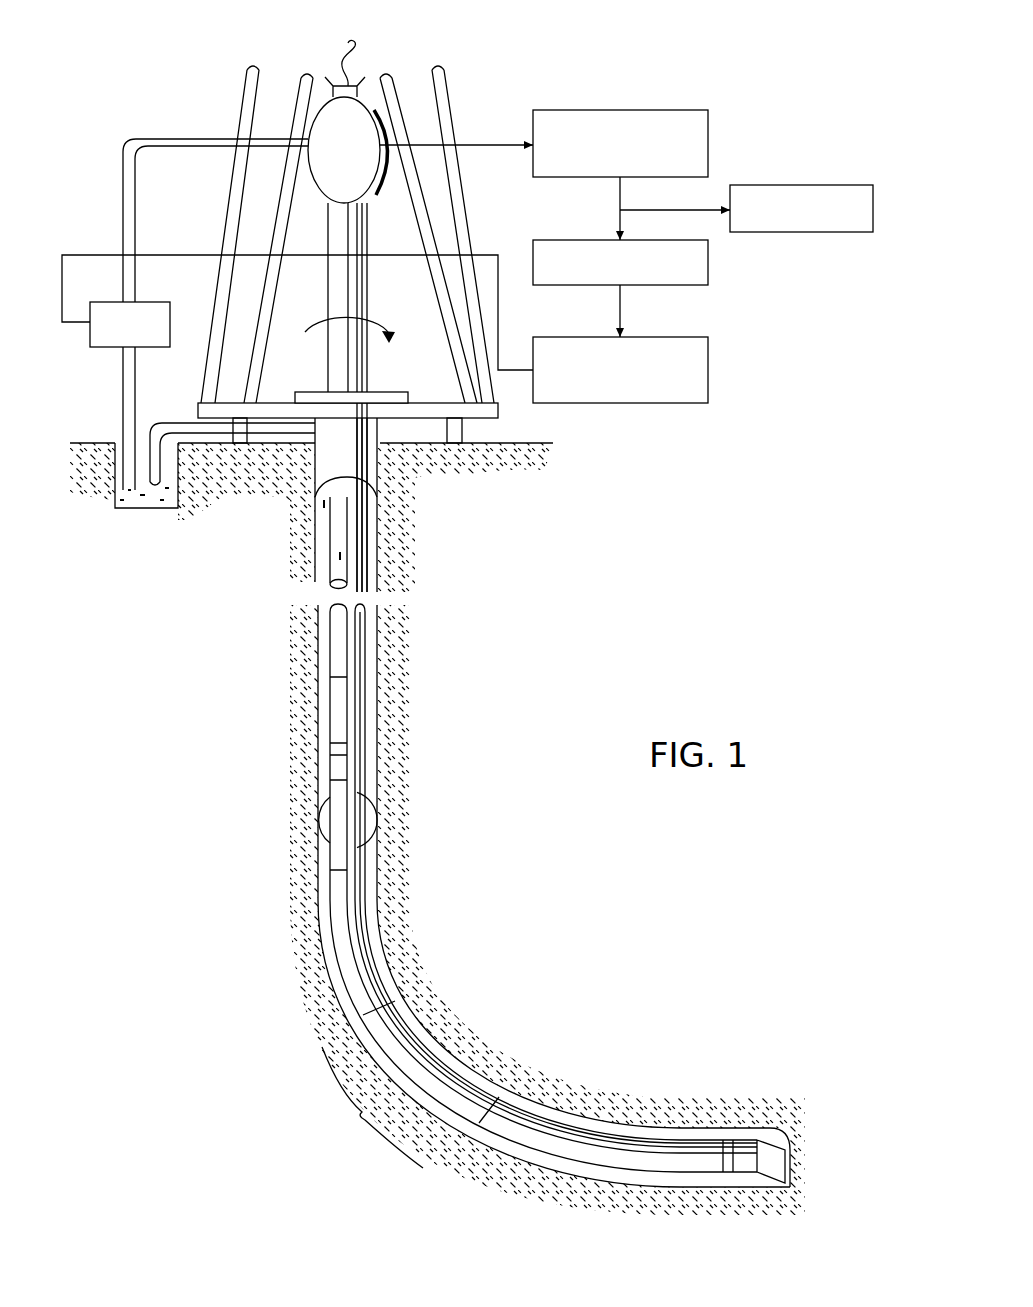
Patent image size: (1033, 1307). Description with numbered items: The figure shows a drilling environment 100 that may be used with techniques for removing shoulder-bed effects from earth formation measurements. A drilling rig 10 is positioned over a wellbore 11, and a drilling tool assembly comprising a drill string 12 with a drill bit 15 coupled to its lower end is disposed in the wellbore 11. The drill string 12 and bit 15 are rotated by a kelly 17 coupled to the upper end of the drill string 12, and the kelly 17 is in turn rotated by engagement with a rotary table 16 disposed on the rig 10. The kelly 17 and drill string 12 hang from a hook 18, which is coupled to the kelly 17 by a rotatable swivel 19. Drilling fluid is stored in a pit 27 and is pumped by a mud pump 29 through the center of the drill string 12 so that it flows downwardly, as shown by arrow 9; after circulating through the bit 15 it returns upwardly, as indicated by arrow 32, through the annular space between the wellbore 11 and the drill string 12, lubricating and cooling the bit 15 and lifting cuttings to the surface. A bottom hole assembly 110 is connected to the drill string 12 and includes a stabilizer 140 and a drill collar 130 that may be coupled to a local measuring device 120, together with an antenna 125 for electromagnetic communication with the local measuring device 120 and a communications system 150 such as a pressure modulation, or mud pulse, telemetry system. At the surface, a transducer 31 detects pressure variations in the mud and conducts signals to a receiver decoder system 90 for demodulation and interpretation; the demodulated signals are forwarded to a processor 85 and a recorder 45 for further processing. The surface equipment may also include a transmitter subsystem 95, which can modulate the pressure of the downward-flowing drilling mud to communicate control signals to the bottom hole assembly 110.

The drilling environment 100 is at (764, 17).
The hook 18 is at (336, 50).
The rotatable swivel 19 is at (356, 160).
The transducer 31 is at (389, 178).
The kelly 17 is at (335, 232).
The rotary table 16 is at (304, 390).
The drilling rig 10 is at (515, 412).
The receiver decoder system 90 is at (576, 110).
The recorder 45 is at (841, 185).
The processor 85 is at (708, 266).
The transmitter subsystem 95 is at (708, 353).
The mud pump 29 is at (104, 348).
The pit 27 is at (113, 478).
The arrow 9 is at (316, 530).
The arrow 32 is at (370, 538).
The drill string 12 is at (340, 650).
The wellbore 11 is at (385, 650).
The communications system 150 is at (420, 717).
The bottom hole assembly 110 is at (425, 833).
The stabilizer 140 is at (320, 822).
The drill collar 130 is at (333, 930).
The antenna 125 is at (500, 1105).
The local measuring device 120 is at (367, 1107).
The drill bit 15 is at (766, 1128).